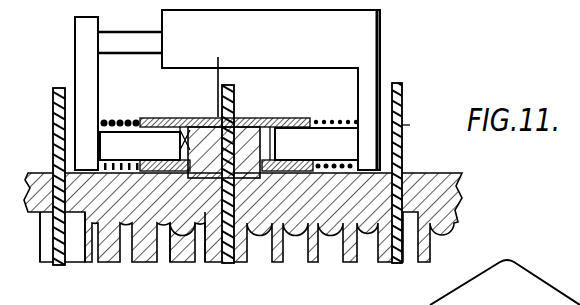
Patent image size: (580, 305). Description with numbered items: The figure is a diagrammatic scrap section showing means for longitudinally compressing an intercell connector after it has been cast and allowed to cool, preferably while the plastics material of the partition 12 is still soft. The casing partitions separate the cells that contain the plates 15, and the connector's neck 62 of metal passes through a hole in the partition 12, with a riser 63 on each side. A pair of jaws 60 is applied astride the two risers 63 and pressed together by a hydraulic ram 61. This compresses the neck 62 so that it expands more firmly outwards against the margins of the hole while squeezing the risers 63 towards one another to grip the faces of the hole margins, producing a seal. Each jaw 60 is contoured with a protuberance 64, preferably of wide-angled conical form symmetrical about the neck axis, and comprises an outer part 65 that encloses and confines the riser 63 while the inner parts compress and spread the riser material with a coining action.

The intercell partition 12 is at (236, 97).
The plates 15 is at (105, 262).
The jaws 60 is at (163, 133).
The hydraulic ram 61 is at (316, 50).
The neck 62 is at (219, 72).
The risers 63 is at (180, 139).
The protuberance 64 is at (190, 127).
The outer part 65 is at (147, 117).